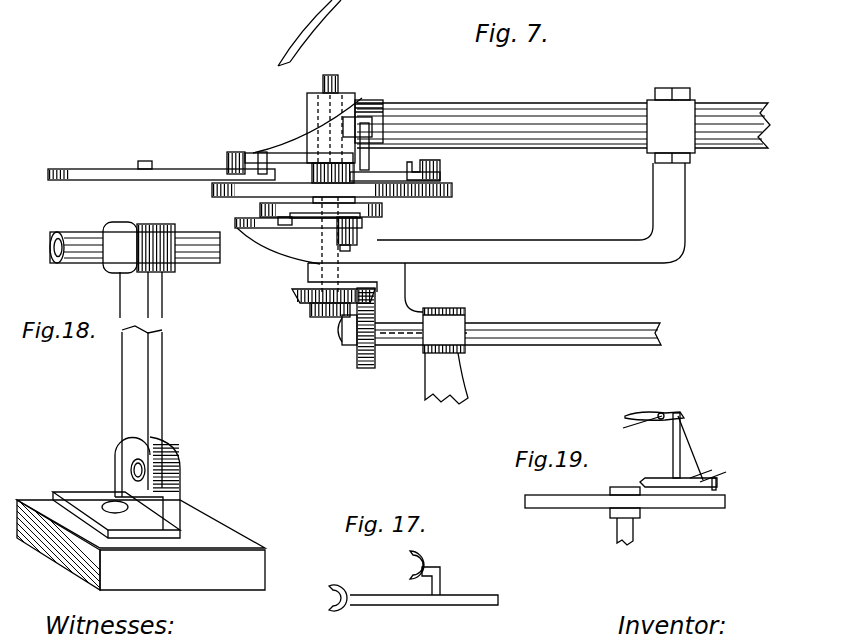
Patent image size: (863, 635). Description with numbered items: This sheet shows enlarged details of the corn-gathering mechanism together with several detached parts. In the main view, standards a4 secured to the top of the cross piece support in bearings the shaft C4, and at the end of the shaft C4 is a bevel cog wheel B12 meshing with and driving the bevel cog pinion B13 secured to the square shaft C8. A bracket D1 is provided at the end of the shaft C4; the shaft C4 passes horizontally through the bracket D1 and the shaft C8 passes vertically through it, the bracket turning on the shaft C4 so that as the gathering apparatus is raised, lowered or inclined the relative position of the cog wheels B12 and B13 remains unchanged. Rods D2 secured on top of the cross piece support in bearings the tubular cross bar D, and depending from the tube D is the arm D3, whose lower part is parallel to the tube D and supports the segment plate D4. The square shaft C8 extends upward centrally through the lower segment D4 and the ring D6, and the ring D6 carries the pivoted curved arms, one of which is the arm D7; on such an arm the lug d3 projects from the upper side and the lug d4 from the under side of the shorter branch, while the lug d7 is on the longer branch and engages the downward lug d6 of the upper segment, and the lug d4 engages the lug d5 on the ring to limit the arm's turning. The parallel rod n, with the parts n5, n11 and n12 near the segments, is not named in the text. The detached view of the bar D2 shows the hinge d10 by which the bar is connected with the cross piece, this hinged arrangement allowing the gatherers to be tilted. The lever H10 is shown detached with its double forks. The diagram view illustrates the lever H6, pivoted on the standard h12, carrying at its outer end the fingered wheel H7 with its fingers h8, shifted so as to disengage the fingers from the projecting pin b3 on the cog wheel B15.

In FIG. 7, the rod n is at (563, 125).
In FIG. 7, the arm D3 is at (525, 242).
In FIG. 7, the bracket D1 is at (405, 285).
In FIG. 7, the bevel cog pinion B13 is at (300, 300).
In FIG. 7, the bevel cog wheel B12 is at (368, 356).
In FIG. 7, the shaft C4 is at (505, 322).
In FIG. 7, the standards a4 is at (466, 387).
In FIG. 7, the square shaft C8 is at (338, 87).
In FIG. 7, the lug d6 is at (385, 128).
In FIG. 7, the projecting lug d7 is at (369, 172).
In FIG. 7, the cam plate n5 is at (298, 150).
In FIG. 7, the projecting lug d3 is at (262, 152).
In FIG. 7, the plate n11 is at (402, 176).
In FIG. 7, the curved arm D7 is at (110, 177).
In FIG. 7, the ring D6 is at (455, 191).
In FIG. 7, the lug d5 is at (383, 212).
In FIG. 7, the bar n12 is at (388, 214).
In FIG. 7, the projecting lug d4 is at (255, 184).
In FIG. 7, the segment plate D4 is at (318, 220).
In FIG. 7, the tubular cross bar D is at (98, 258).
In FIG. 7, the rods D2 is at (163, 300).
In FIG. 18, the hinge d10 is at (83, 498).
In FIG. 19, the cog wheel B15 is at (575, 508).
In FIG. 19, the standard h12 is at (653, 407).
In FIG. 19, the lever H6 is at (681, 418).
In FIG. 19, the fingered wheel H7 is at (695, 466).
In FIG. 19, the fingers h8 is at (674, 469).
In FIG. 19, the projecting pin b3 is at (726, 481).
In FIG. 17, the lever H10 is at (413, 581).